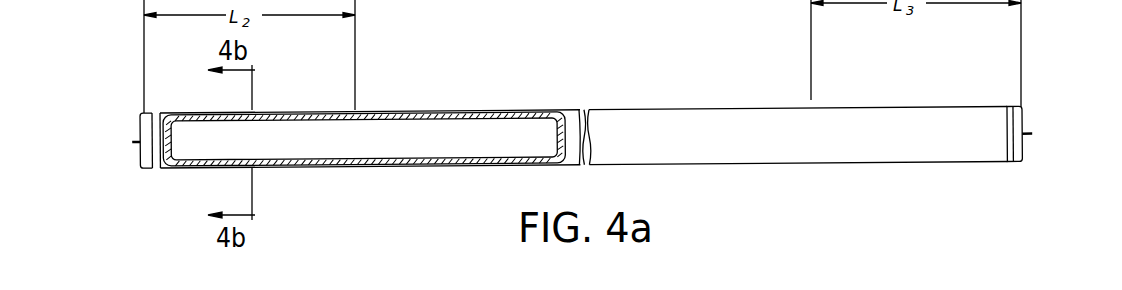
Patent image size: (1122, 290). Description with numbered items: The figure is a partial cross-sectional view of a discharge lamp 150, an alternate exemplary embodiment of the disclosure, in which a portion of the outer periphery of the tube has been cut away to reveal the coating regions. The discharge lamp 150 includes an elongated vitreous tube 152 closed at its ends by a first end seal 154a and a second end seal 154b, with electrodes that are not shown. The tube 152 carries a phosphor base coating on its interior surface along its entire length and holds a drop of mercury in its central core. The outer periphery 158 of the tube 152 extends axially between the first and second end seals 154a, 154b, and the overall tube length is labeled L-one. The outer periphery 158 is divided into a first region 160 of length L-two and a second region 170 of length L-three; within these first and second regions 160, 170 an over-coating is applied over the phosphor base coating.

The discharge lamp 150 is at (588, 124).
The elongated vitreous tube 152 is at (795, 125).
The first end seal 154a is at (155, 172).
The second end seal 154b is at (1013, 158).
The outer periphery 158 is at (652, 110).
The first region 160 is at (273, 110).
The second region 170 is at (880, 108).